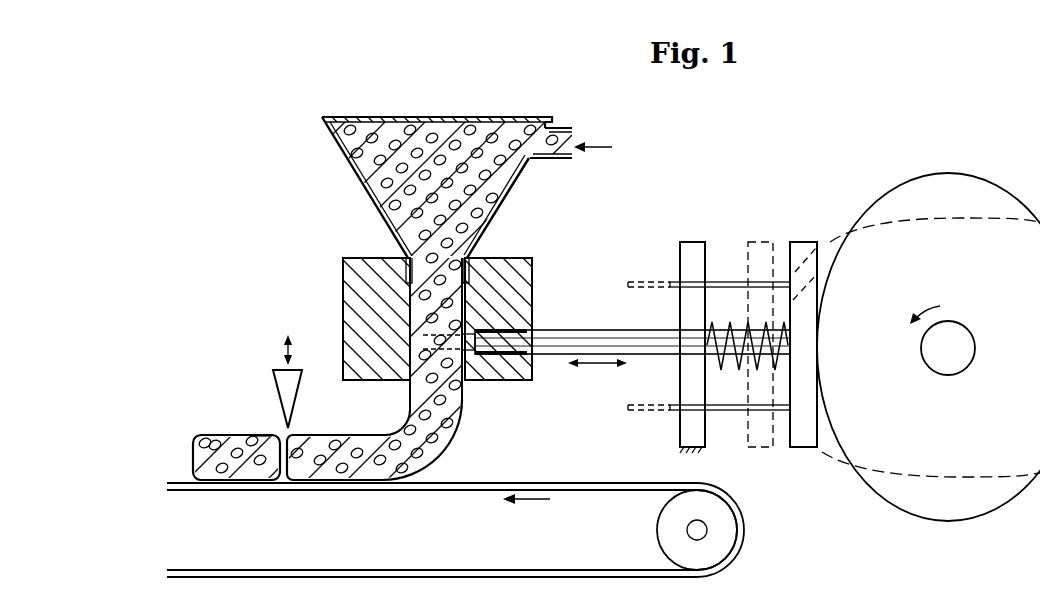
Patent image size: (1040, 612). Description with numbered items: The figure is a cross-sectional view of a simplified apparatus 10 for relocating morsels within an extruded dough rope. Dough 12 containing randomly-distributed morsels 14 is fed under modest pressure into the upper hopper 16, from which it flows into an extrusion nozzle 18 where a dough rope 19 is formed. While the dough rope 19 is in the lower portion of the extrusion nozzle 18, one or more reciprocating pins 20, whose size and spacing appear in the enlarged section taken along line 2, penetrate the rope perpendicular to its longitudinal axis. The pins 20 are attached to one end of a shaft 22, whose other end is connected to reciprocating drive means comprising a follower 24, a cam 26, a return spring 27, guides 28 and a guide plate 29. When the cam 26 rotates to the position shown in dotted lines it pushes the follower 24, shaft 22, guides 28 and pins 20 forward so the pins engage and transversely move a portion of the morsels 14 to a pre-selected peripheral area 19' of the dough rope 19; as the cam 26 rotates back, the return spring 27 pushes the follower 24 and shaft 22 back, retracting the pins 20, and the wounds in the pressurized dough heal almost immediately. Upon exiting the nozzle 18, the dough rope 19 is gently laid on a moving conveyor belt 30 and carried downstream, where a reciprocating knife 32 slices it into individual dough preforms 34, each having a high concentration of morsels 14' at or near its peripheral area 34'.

The apparatus 10 is at (655, 173).
The dough 12 is at (568, 141).
The morsels 14 is at (425, 280).
The morsels 14' is at (214, 435).
The upper hopper 16 is at (352, 168).
The extrusion nozzle 18 is at (508, 262).
The dough rope 19 is at (400, 316).
The peripheral area 19' is at (381, 299).
The section line 2- 2 is at (468, 305).
The reciprocating pins 20 is at (503, 320).
The shaft 22 is at (594, 336).
The follower 24 is at (800, 407).
The cam 26 is at (1016, 284).
The return spring 27 is at (733, 322).
The guides 28 is at (733, 281).
The guide plate 29 is at (688, 246).
The conveyor belt 30 is at (417, 490).
The reciprocating knife 32 is at (282, 392).
The dough preforms 34 is at (381, 318).
The peripheral area 34' is at (245, 416).